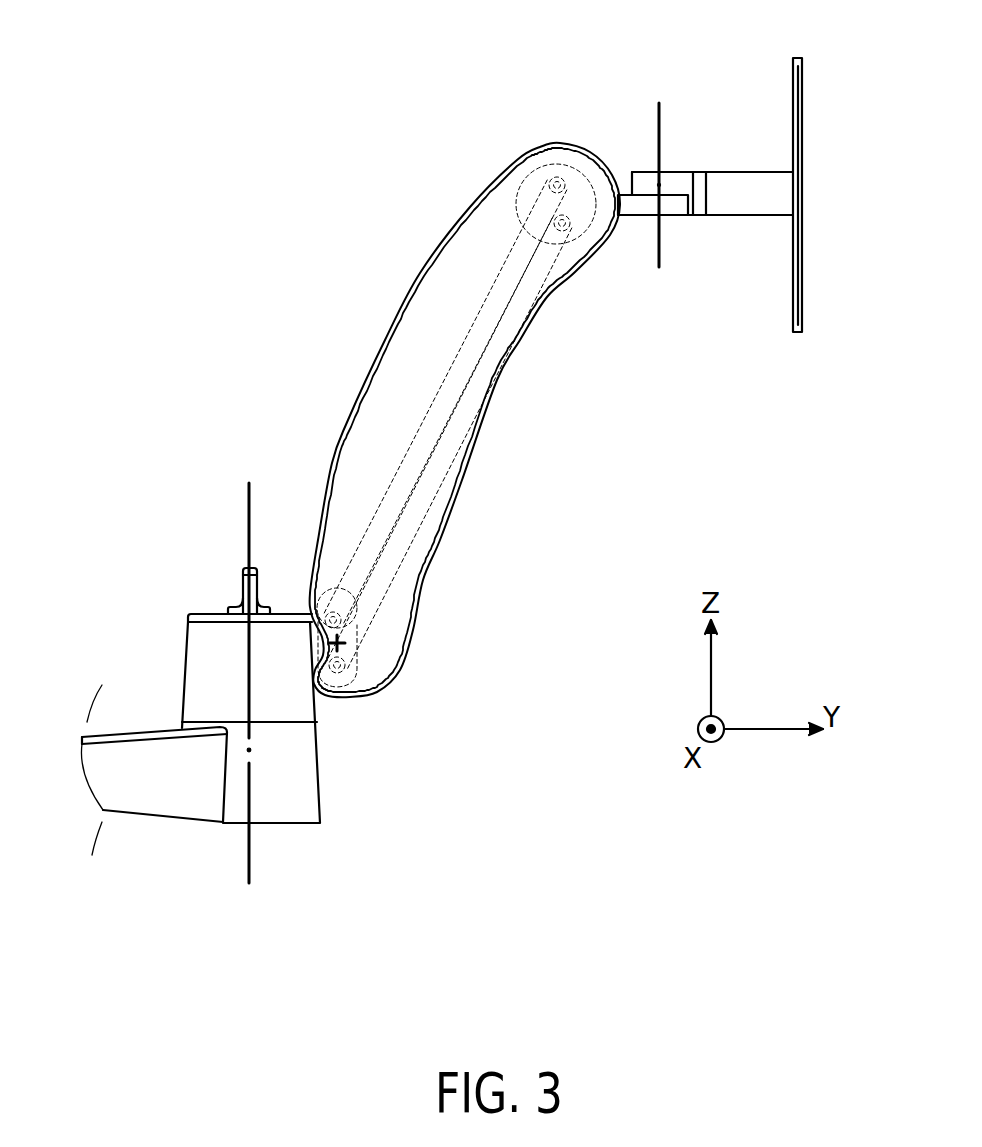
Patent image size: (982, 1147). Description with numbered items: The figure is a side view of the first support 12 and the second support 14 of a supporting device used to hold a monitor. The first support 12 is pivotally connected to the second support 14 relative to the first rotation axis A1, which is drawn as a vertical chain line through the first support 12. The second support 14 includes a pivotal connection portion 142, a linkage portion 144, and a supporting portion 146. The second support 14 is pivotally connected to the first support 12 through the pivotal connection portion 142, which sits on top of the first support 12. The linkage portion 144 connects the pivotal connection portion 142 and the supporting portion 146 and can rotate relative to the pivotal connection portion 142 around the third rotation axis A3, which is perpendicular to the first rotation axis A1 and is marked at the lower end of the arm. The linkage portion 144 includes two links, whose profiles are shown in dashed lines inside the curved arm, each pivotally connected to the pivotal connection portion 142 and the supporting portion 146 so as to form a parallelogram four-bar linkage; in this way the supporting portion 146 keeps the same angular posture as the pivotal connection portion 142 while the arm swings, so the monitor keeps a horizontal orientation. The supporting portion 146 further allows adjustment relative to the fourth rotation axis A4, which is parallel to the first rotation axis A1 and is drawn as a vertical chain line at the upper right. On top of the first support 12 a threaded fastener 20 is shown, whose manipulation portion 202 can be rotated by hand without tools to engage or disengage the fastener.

The first support 12 is at (153, 833).
The second support 14 is at (422, 354).
The pivotal connection portion 142 is at (287, 640).
The linkage portion 144 is at (465, 420).
The supporting portion 146 is at (645, 182).
The threaded fastener 20 is at (198, 573).
The manipulation portion 202 is at (242, 590).
The first rotation axis A1 is at (243, 513).
The third rotation axis A3 is at (345, 647).
The fourth rotation axis A4 is at (660, 130).